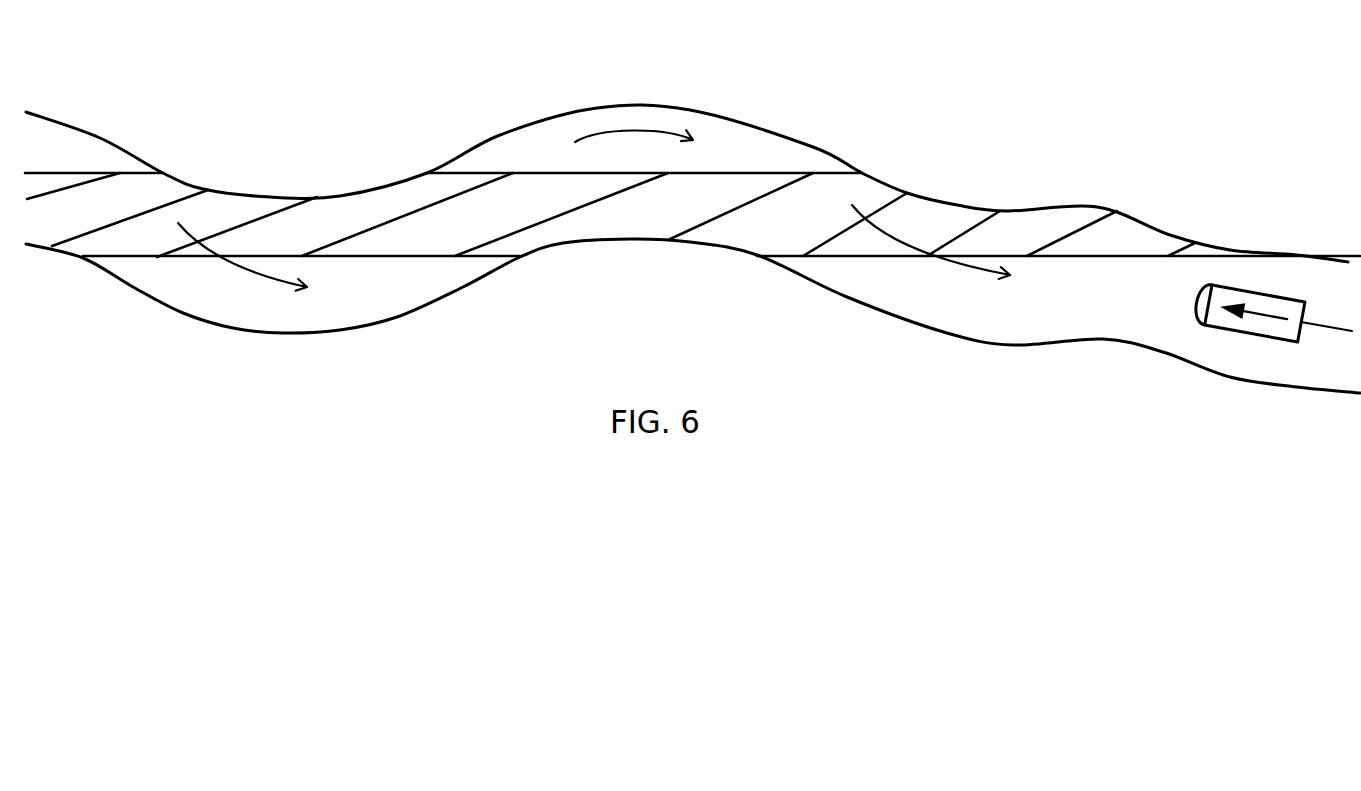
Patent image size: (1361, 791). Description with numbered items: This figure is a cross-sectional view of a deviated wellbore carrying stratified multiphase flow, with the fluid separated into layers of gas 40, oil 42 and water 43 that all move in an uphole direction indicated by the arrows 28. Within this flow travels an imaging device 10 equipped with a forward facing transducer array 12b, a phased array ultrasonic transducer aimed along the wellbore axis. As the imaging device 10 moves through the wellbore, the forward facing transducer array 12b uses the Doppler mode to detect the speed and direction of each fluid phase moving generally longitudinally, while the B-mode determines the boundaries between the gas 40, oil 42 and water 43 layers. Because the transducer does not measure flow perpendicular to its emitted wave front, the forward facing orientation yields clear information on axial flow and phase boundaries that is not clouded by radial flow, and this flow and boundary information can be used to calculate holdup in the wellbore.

The imaging device 10 is at (1246, 334).
The forward facing transducer array 12b is at (1198, 302).
The arrows 28 is at (282, 283).
The gas 40 is at (63, 148).
The oil 42 is at (227, 205).
The water 43 is at (200, 295).